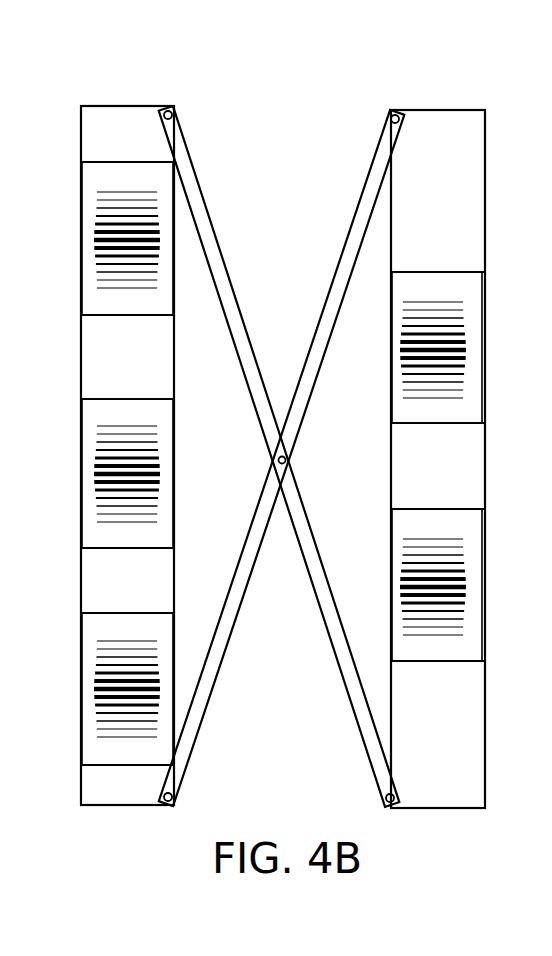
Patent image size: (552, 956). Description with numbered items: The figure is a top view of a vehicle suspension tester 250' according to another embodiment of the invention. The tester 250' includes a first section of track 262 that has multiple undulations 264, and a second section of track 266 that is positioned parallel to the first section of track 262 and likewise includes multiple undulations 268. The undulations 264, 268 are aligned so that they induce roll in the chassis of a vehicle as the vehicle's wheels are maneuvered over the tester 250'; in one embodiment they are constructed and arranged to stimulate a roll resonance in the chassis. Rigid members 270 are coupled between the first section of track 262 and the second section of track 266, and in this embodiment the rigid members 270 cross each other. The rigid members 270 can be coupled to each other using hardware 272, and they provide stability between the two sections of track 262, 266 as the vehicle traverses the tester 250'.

The vehicle suspension tester 250' is at (284, 421).
The first section of track 262 is at (124, 106).
The undulations 264 is at (82, 257).
The second section of track 266 is at (443, 110).
The undulations 268 is at (482, 348).
The rigid members 270 is at (226, 258).
The hardware 272 is at (288, 458).